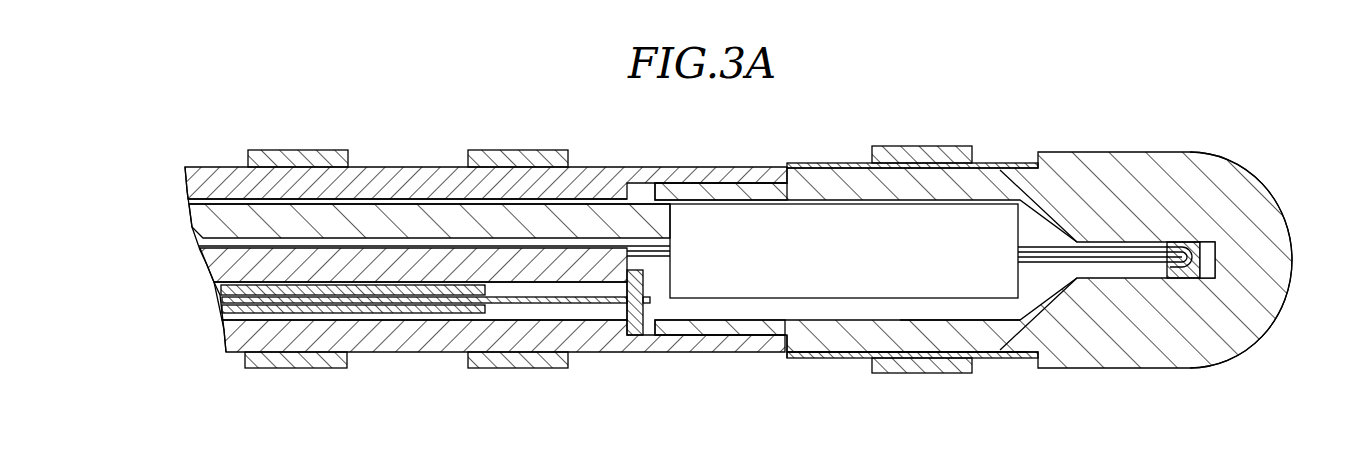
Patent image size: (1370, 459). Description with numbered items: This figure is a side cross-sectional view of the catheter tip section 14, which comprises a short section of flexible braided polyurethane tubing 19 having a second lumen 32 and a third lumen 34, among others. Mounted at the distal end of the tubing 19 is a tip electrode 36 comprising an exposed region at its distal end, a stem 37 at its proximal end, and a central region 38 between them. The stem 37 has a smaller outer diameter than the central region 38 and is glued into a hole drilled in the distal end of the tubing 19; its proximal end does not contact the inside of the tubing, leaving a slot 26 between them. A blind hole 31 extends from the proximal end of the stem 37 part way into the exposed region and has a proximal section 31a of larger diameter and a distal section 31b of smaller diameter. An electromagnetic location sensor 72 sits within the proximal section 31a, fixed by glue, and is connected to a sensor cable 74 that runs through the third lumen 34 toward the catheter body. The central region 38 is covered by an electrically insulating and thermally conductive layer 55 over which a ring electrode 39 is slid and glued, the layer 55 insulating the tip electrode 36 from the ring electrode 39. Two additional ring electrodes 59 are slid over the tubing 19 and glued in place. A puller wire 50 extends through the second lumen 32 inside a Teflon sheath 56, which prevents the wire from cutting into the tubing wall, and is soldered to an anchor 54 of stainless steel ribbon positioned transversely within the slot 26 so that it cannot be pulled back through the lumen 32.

The tip section 14 is at (430, 400).
The tubing 19 is at (381, 175).
The electromagnetic sensor cable 74 is at (442, 217).
The ring electrodes 59 is at (291, 150).
The third lumen 34 is at (590, 203).
The slot 26 is at (646, 185).
The electromagnetic location sensor 72 is at (748, 218).
The electrically insulating and thermally conductive layer 55 is at (806, 163).
The blind hole 31 is at (853, 200).
The tip electrode 36 is at (1266, 307).
The distal section 31b is at (1207, 270).
The central region 38 is at (765, 277).
The ring electrode 39 is at (930, 372).
The proximal section 31a is at (797, 308).
The stem 37 is at (729, 328).
The anchor 54 is at (640, 330).
The second lumen 32 is at (583, 310).
The puller wire 50 is at (527, 300).
The sheath 56 is at (258, 305).